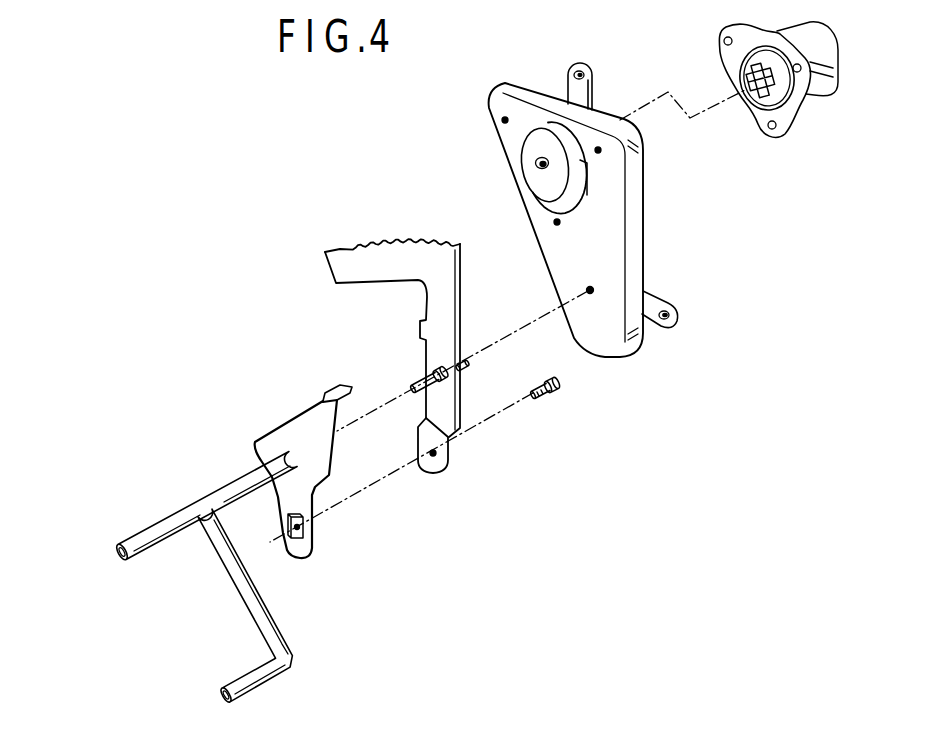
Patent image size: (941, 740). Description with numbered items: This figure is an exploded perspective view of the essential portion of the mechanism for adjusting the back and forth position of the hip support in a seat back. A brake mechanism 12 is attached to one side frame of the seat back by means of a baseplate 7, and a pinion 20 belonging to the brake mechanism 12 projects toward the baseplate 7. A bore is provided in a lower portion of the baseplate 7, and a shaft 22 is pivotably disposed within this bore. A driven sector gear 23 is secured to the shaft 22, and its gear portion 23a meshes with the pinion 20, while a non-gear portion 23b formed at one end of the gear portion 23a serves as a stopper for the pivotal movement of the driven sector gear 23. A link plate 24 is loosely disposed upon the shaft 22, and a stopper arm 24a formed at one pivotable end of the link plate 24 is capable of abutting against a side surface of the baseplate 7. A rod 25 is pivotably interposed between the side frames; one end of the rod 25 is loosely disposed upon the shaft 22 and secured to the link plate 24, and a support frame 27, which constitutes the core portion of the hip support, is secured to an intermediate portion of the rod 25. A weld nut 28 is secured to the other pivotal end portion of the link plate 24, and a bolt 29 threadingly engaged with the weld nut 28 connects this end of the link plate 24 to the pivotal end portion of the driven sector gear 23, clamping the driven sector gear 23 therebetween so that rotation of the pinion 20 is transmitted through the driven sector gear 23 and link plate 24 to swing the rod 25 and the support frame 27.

The baseplate 7 is at (490, 108).
The brake mechanism 12 is at (841, 49).
The pinion 20 is at (778, 100).
The shaft 22 is at (442, 382).
The driven sector gear 23 is at (366, 322).
The gear portion 23a is at (406, 250).
The non-gear portion 23b is at (326, 251).
The link plate 24 is at (346, 447).
The stopper arm 24a is at (338, 389).
The rod 25 is at (243, 478).
The support frame 27 is at (292, 652).
The weld nut 28 is at (315, 534).
The bolt 29 is at (560, 386).